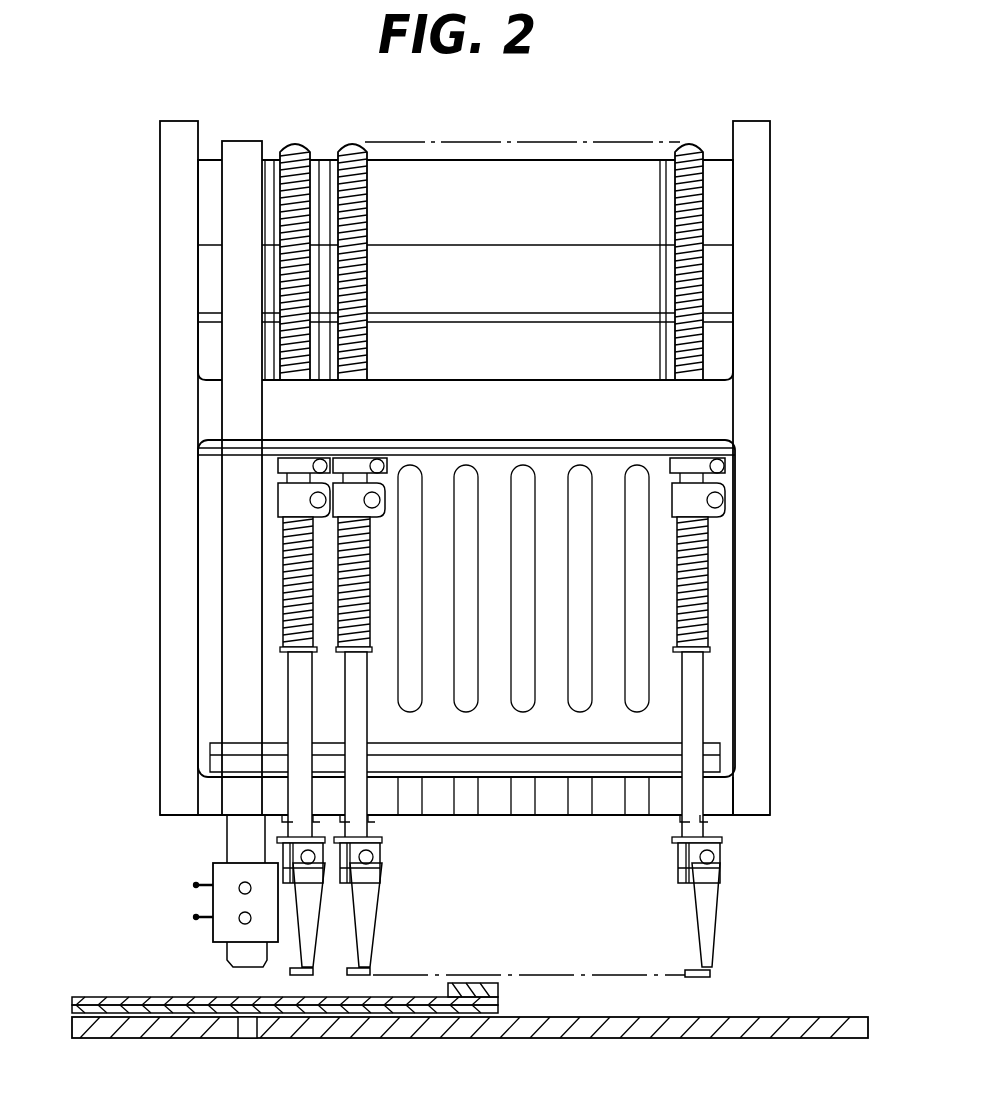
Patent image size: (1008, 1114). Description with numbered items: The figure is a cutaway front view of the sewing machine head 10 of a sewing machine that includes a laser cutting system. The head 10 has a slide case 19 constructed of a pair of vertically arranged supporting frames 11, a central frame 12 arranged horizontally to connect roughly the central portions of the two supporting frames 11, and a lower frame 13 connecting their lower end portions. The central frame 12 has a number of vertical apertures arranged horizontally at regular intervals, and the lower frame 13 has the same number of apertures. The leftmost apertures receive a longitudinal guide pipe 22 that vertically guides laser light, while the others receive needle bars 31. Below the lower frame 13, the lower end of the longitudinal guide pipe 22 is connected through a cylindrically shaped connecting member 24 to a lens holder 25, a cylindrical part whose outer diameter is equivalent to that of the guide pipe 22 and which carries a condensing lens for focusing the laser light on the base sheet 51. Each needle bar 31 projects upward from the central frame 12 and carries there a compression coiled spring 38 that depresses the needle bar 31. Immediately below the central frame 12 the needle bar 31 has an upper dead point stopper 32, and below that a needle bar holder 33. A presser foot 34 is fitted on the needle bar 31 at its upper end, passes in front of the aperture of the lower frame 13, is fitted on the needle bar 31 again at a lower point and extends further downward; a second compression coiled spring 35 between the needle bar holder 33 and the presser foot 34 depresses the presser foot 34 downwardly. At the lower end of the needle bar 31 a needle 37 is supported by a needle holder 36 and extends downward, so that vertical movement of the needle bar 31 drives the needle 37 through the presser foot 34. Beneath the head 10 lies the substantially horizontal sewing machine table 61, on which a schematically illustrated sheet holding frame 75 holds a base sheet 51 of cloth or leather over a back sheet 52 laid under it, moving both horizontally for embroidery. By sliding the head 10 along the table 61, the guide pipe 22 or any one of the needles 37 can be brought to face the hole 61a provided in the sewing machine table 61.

The sewing machine head 10 is at (774, 156).
The supporting frames 11 is at (168, 288).
The central frame 12 is at (695, 415).
The lower frame 13 is at (185, 793).
The slide case 19 is at (775, 795).
The longitudinal guide pipe 22 is at (235, 600).
The connecting member 24 is at (225, 875).
The lens holder 25 is at (255, 960).
The needle bar 31 is at (295, 258).
The upper dead point stopper 32 is at (290, 466).
The needle bar holder 33 is at (290, 498).
The presser foot 34 is at (295, 682).
The compression coiled spring 35 is at (290, 558).
The needle holder 36 is at (293, 857).
The needle 37 is at (700, 893).
The compression coiled spring 38 is at (295, 190).
The base sheet 51 is at (170, 1008).
The back sheet 52 is at (110, 998).
The sewing machine table 61 is at (165, 1032).
The hole 61a is at (242, 1032).
The sheet holding frame 75 is at (498, 992).